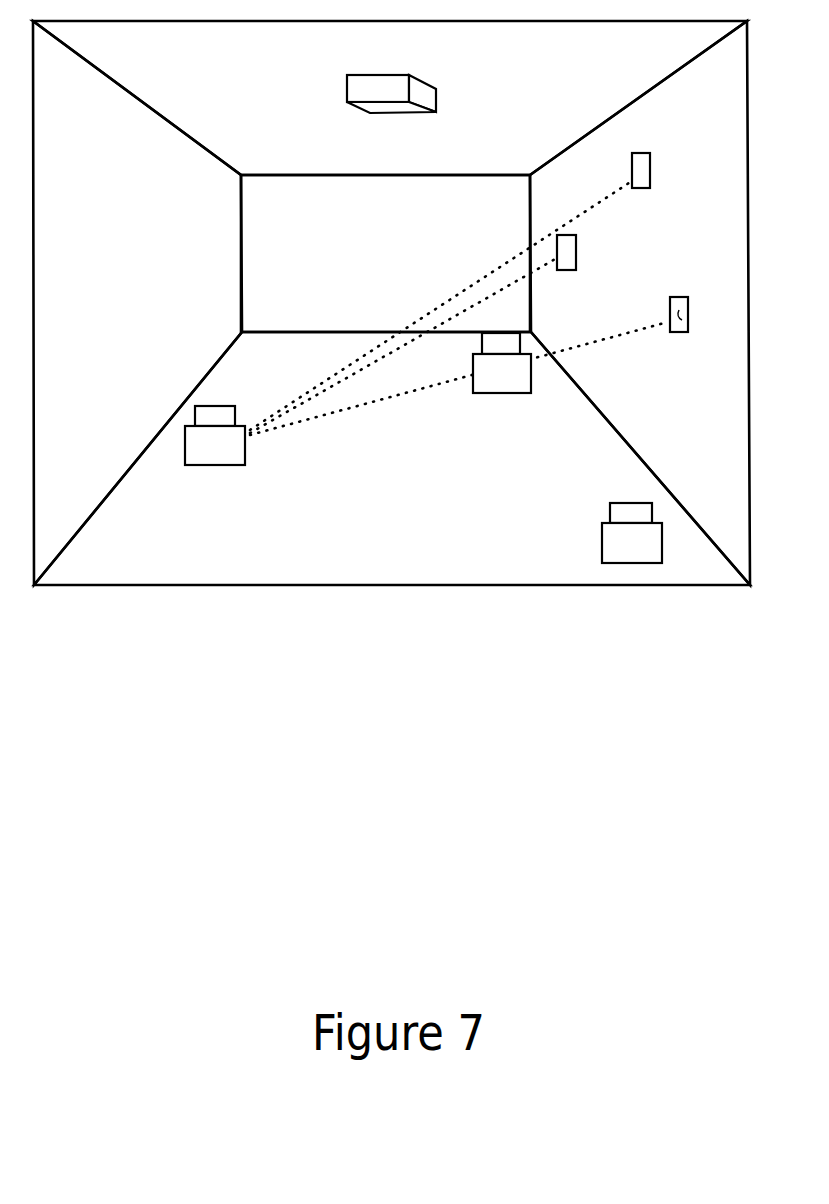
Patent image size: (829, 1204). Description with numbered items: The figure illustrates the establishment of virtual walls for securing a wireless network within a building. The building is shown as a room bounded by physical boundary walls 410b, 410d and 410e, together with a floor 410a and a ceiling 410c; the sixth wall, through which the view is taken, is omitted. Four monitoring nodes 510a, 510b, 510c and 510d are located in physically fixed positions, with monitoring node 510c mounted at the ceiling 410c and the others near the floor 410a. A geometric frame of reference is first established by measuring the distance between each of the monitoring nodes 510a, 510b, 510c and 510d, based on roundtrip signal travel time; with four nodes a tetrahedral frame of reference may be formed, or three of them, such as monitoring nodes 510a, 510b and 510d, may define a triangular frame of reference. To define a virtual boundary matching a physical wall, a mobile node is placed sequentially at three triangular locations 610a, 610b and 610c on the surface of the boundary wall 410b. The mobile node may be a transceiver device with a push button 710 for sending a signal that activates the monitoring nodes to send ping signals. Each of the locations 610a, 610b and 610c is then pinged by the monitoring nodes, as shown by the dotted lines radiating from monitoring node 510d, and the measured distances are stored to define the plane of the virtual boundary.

The floor 410a is at (392, 546).
The physical boundary wall 410b is at (696, 411).
The ceiling 410c is at (592, 75).
The physical boundary wall 410d is at (115, 273).
The physical boundary wall 410e is at (454, 266).
The monitoring node 510a is at (652, 550).
The monitoring node 510b is at (523, 378).
The monitoring node 510c is at (346, 88).
The monitoring node 510d is at (242, 450).
The mobile node location 610a is at (585, 220).
The mobile node location 610b is at (644, 153).
The mobile node location 610c is at (677, 297).
The push button 710 is at (683, 318).